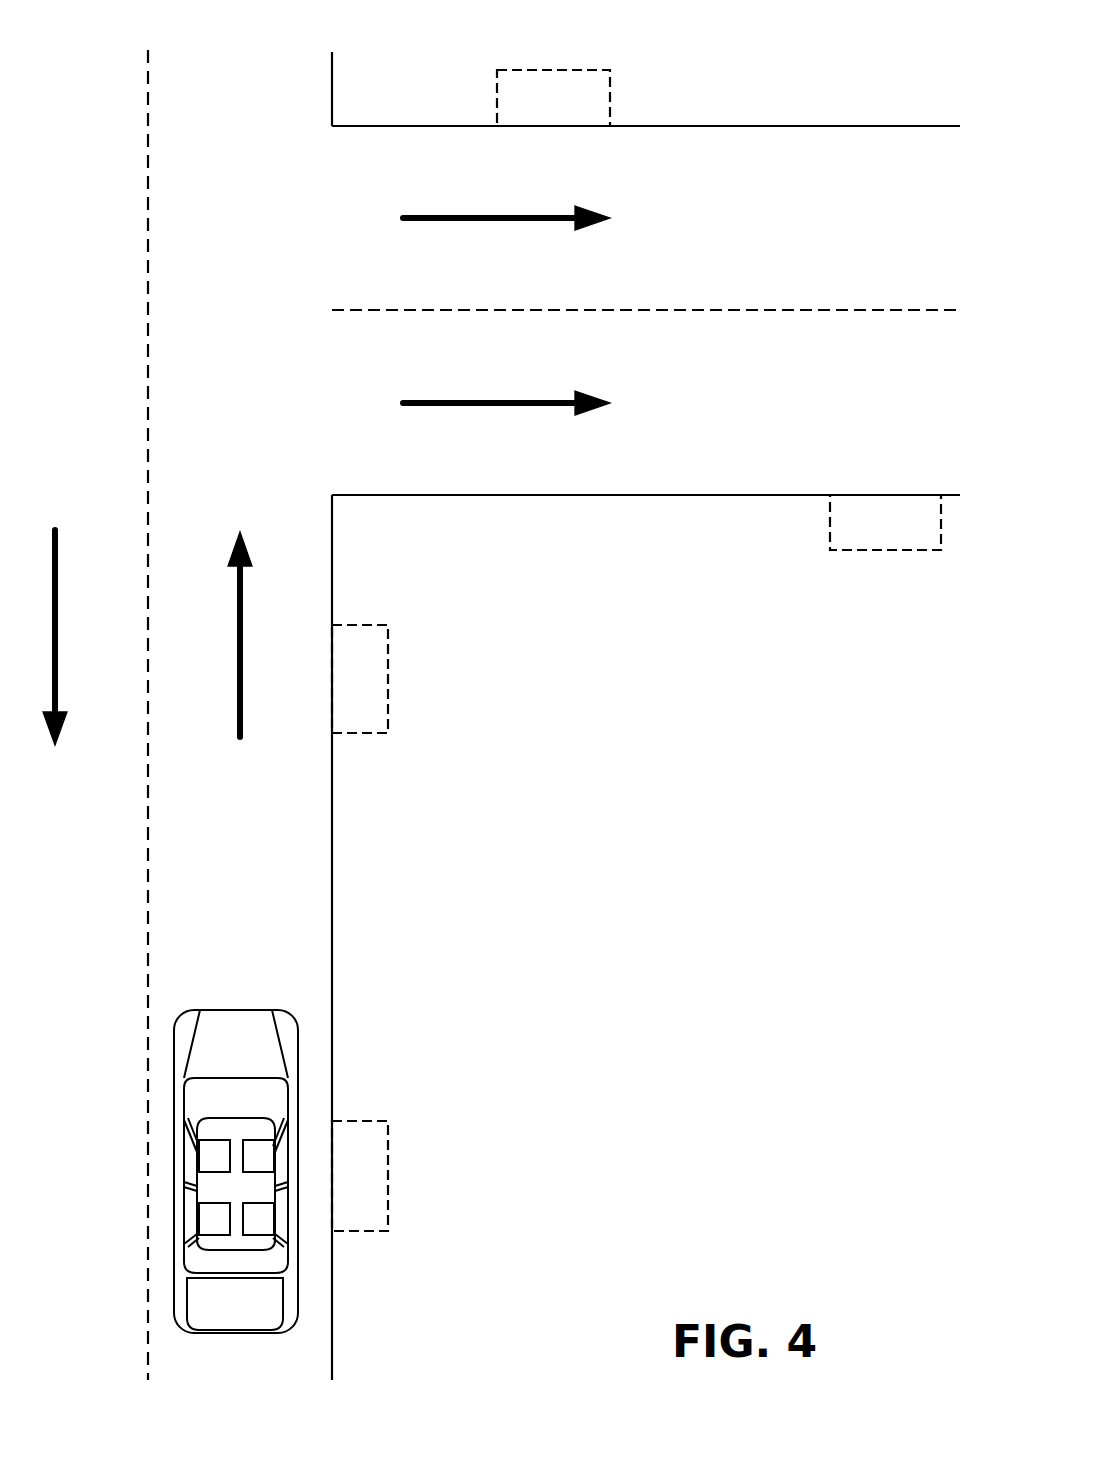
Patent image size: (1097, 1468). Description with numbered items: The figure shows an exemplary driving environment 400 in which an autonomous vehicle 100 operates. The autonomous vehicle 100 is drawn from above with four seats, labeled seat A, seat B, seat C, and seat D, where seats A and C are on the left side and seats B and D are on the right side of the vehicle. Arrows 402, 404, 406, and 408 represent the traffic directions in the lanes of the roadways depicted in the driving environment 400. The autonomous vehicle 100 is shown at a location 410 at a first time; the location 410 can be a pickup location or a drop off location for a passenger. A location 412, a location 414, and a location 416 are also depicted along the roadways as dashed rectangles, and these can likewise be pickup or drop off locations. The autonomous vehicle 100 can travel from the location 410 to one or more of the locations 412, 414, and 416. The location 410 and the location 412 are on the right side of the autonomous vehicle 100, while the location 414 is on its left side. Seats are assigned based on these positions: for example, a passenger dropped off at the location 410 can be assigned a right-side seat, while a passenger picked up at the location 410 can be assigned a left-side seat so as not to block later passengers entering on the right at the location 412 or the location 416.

The autonomous vehicle 100 is at (240, 1010).
The driving environment 400 is at (805, 51).
The arrow 402 is at (243, 600).
The arrow 404 is at (58, 592).
The arrow 406 is at (515, 401).
The arrow 408 is at (515, 216).
The location 410 is at (388, 1160).
The location 412 is at (388, 665).
The location 414 is at (553, 70).
The location 416 is at (866, 550).